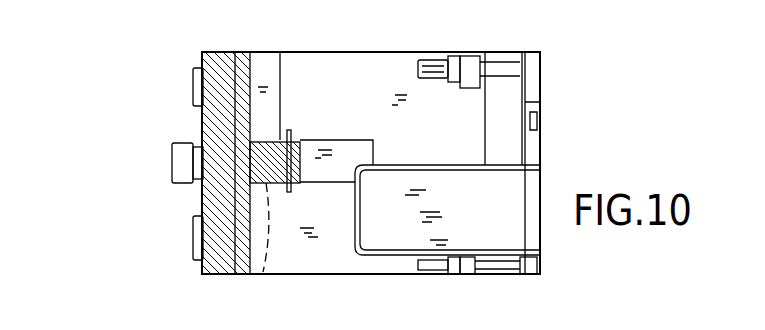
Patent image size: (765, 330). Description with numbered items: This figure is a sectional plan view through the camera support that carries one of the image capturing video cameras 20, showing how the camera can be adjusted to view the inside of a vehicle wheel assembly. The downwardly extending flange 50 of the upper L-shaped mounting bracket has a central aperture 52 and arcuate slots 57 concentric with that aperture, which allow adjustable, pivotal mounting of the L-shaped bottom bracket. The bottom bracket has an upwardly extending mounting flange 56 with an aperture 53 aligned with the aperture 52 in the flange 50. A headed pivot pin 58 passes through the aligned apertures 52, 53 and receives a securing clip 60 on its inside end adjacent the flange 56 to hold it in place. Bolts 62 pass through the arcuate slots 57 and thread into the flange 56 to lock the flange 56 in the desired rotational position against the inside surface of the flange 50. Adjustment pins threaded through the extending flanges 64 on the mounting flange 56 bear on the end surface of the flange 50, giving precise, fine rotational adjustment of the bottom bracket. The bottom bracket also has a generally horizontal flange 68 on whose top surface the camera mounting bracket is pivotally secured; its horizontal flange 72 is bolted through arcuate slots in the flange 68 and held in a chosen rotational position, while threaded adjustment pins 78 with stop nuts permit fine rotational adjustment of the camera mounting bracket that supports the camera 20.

The image capturing video camera 20 is at (380, 225).
The downwardly extending flange 50 is at (205, 50).
The central aperture 52 is at (200, 122).
The aperture 53 is at (266, 274).
The upwardly extending mounting flange 56 is at (275, 72).
The arcuate slots 57 is at (200, 207).
The headed pivot pin 58 is at (300, 140).
The securing clip 60 is at (292, 132).
The bolts 62 is at (172, 165).
The extending flanges 64 is at (193, 88).
The horizontal flange 68 is at (364, 96).
The horizontal flange 72 is at (540, 142).
The threaded adjustment pins 78 is at (435, 65).